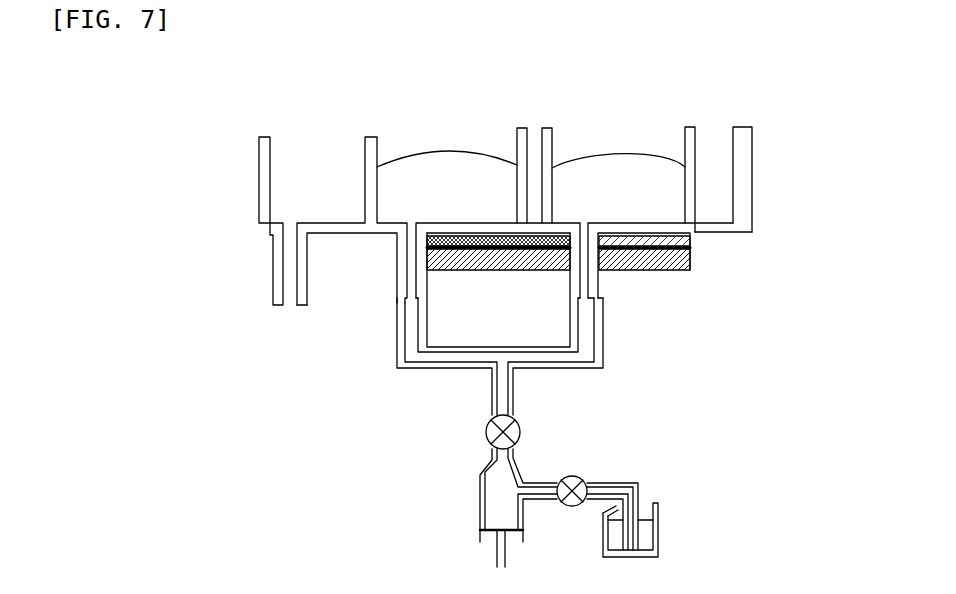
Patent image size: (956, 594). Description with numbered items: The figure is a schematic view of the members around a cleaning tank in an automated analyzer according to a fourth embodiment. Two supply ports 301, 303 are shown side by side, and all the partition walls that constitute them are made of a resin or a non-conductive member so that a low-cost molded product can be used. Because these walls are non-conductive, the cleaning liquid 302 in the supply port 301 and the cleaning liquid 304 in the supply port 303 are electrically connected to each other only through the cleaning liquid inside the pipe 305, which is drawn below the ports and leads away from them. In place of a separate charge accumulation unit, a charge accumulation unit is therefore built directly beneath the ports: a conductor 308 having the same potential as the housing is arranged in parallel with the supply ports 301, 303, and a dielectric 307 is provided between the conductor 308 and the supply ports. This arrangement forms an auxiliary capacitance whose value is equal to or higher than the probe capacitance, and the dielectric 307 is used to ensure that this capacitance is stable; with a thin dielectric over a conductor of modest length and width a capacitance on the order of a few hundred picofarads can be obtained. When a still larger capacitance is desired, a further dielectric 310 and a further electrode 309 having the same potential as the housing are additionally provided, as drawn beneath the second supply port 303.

The supply port 301 is at (468, 145).
The cleaning liquid 302 is at (407, 180).
The supply port 303 is at (642, 137).
The cleaning liquid 304 is at (578, 180).
The pipe 305 is at (408, 370).
The dielectric 307 is at (445, 240).
The conductor 308 is at (485, 264).
The electrode 309 is at (625, 262).
The dielectric 310 is at (688, 248).